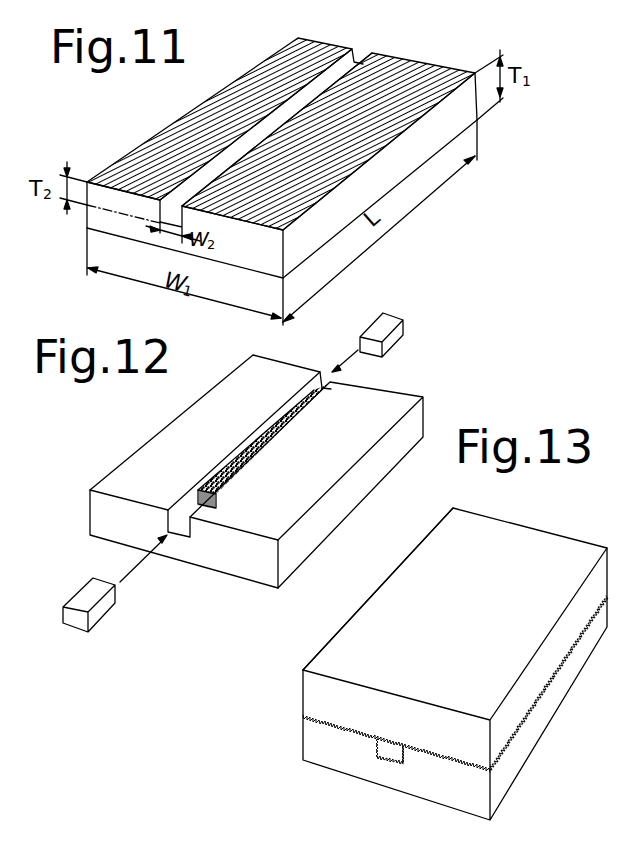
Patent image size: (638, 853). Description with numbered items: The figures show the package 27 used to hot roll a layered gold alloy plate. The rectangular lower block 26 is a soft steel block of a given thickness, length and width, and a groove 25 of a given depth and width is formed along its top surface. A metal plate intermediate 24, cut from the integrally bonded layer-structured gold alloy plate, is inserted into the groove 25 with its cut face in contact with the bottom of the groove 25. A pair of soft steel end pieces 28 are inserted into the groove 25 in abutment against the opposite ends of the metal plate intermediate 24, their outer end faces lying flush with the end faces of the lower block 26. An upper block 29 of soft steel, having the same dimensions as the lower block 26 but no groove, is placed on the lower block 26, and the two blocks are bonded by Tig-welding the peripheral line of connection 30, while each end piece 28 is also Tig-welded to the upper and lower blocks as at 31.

In FIG. 12, the metal plate intermediate 24 is at (238, 450).
In FIG. 11, the groove 25 is at (362, 60).
In FIG. 11, the lower block 26 is at (95, 215).
In FIG. 12, the lower block 26 is at (328, 522).
In FIG. 13, the lower block 26 is at (312, 742).
In FIG. 11, the package 27 is at (148, 135).
In FIG. 13, the package 27 is at (290, 704).
In FIG. 12, the end pieces 28 is at (390, 320).
In FIG. 13, the end pieces 28 is at (387, 762).
In FIG. 13, the upper block 29 is at (348, 636).
In FIG. 13, the peripheral line of connection 30 is at (540, 700).
In FIG. 13, the end piece weld 31 is at (403, 762).